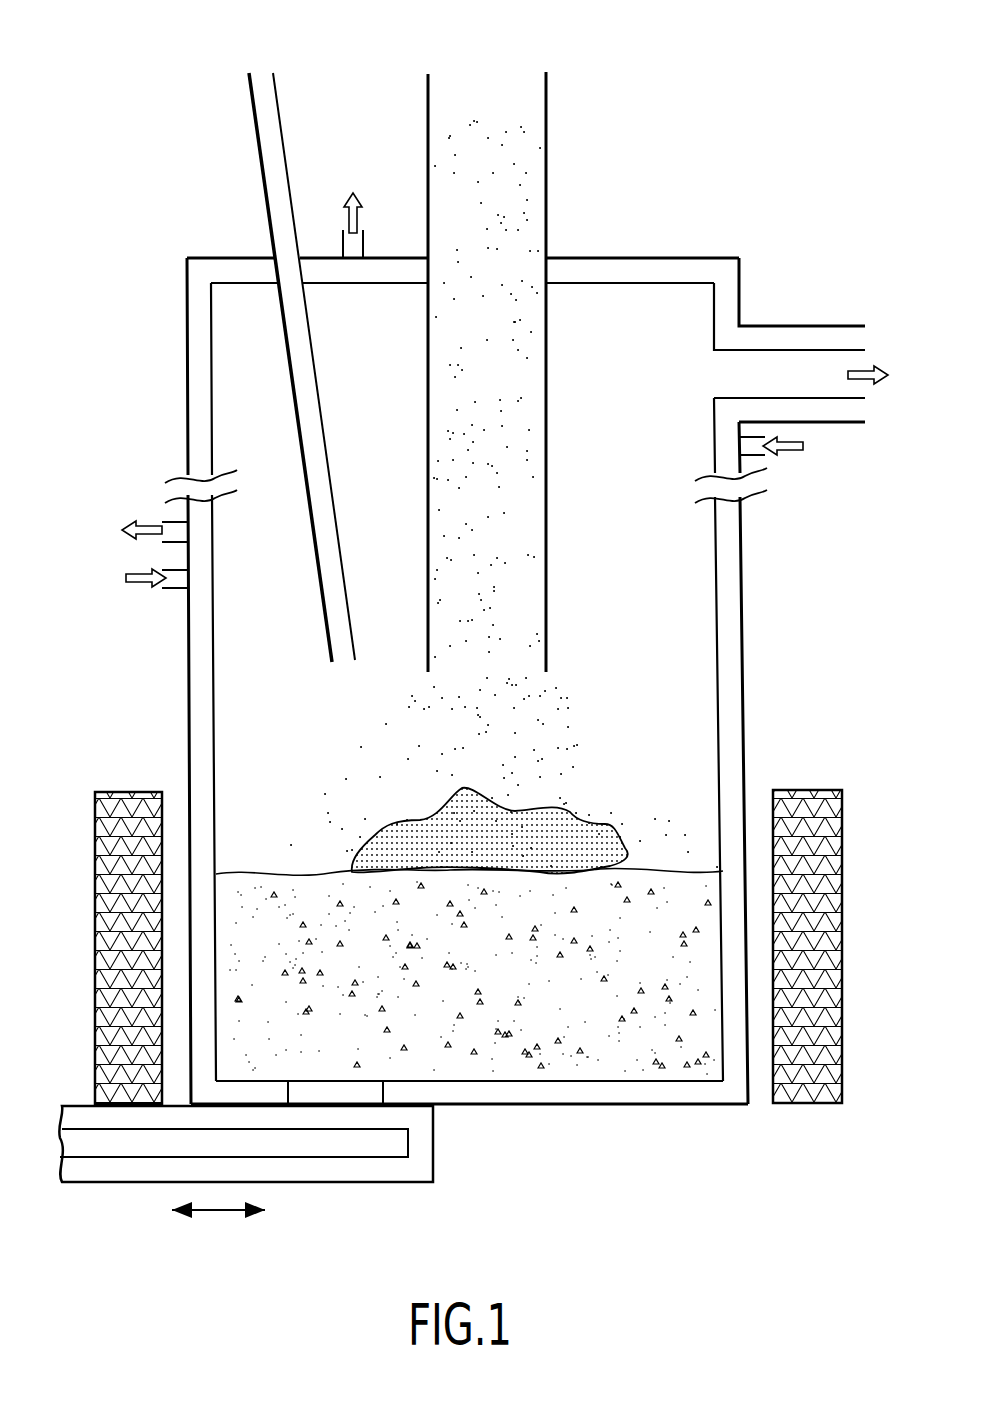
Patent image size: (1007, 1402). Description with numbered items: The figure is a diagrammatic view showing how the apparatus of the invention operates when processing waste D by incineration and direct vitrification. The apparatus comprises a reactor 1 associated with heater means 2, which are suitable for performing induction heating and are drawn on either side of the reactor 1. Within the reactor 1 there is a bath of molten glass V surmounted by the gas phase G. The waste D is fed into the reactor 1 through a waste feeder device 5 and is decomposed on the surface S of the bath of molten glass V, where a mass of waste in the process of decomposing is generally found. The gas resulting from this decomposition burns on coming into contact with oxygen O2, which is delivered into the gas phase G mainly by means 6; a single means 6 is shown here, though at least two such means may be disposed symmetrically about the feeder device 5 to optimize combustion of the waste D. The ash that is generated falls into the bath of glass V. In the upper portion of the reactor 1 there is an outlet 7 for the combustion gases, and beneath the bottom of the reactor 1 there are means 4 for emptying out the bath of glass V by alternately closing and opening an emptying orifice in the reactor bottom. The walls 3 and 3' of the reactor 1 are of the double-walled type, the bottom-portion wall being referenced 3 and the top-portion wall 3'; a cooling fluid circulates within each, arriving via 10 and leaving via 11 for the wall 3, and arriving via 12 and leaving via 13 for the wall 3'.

The reactor 1 is at (515, 648).
The heater means 2 is at (858, 887).
The wall 3 is at (515, 681).
The wall 3' is at (463, 237).
The means for emptying out the bath of glass 4 is at (104, 1190).
The waste feeder device 5 is at (504, 462).
The means for delivering oxygen 6 is at (251, 165).
The outlet for the combustion gases 7 is at (765, 365).
The cooling fluid inlet 10 is at (163, 590).
The cooling fluid outlet 11 is at (162, 522).
The cooling fluid inlet 12 is at (763, 466).
The cooling fluid outlet 13 is at (364, 242).
The waste D is at (500, 486).
The gas phase G is at (609, 456).
The surface of the bath of molten glass S is at (641, 867).
The bath of molten glass V is at (522, 988).
The oxygen O2 is at (262, 86).